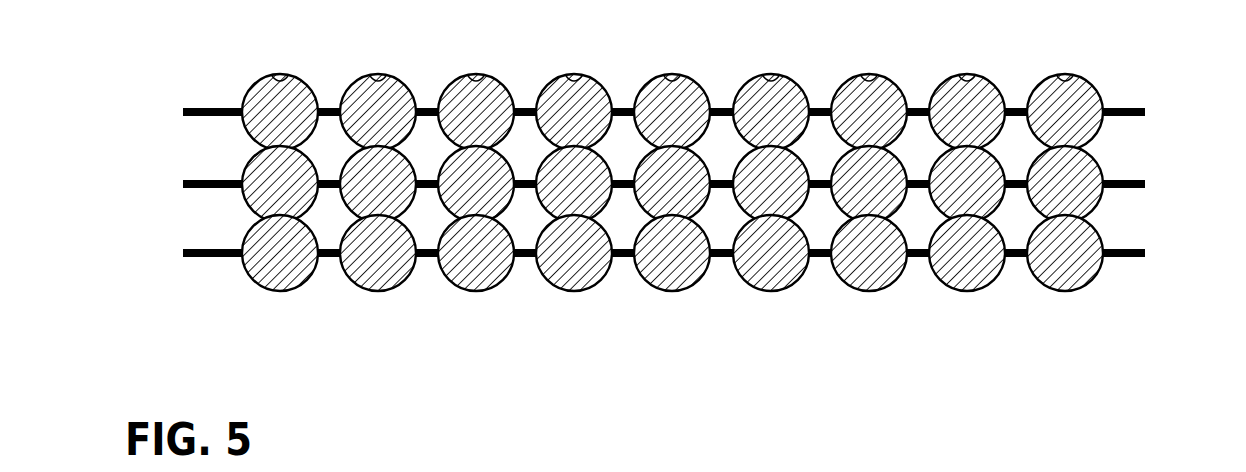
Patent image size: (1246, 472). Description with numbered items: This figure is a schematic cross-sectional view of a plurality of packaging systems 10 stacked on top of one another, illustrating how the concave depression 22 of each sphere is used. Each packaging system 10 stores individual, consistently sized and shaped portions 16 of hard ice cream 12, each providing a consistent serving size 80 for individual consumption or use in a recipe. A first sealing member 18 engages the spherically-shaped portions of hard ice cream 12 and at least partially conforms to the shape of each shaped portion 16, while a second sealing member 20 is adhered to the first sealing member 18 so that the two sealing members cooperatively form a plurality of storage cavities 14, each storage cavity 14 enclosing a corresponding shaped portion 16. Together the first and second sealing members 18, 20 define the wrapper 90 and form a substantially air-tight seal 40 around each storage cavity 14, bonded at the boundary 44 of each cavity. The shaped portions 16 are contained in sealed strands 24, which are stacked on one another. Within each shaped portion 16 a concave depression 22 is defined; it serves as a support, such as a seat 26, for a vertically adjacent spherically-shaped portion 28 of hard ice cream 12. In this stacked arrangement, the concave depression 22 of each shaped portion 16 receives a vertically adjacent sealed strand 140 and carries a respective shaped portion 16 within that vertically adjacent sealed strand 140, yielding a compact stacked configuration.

The packaging system 10 is at (878, 45).
The hard ice cream 12 is at (1073, 263).
The storage cavity 14 is at (292, 297).
The shaped portion 16 is at (784, 286).
The first sealing member 18 is at (1121, 109).
The second sealing member 20 is at (1127, 118).
The concave depression 22 is at (672, 77).
The sealed strand 24 is at (280, 68).
The seat 26 is at (772, 157).
The vertically adjacent spherically-shaped portion 28 is at (238, 152).
The air-tight seal 40 is at (424, 270).
The boundary 44 is at (524, 100).
The consistent serving size 80 is at (977, 302).
The wrapper 90 is at (1014, 98).
The vertically adjacent sealed strand 140 is at (210, 287).